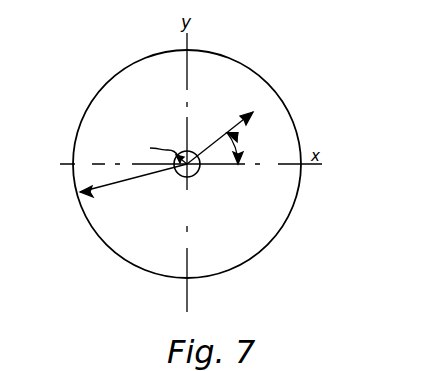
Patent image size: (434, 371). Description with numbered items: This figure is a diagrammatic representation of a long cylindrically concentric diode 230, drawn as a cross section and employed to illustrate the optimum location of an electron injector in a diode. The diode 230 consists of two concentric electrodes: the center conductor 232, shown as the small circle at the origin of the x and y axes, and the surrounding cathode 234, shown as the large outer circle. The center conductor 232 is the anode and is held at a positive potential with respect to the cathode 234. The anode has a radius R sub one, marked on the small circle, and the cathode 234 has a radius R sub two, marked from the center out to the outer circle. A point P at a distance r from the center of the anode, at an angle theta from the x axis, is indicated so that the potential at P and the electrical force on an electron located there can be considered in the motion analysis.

The cylindrically concentric diode 230 is at (160, 110).
The center conductor 232 is at (196, 175).
The cathode 234 is at (298, 130).